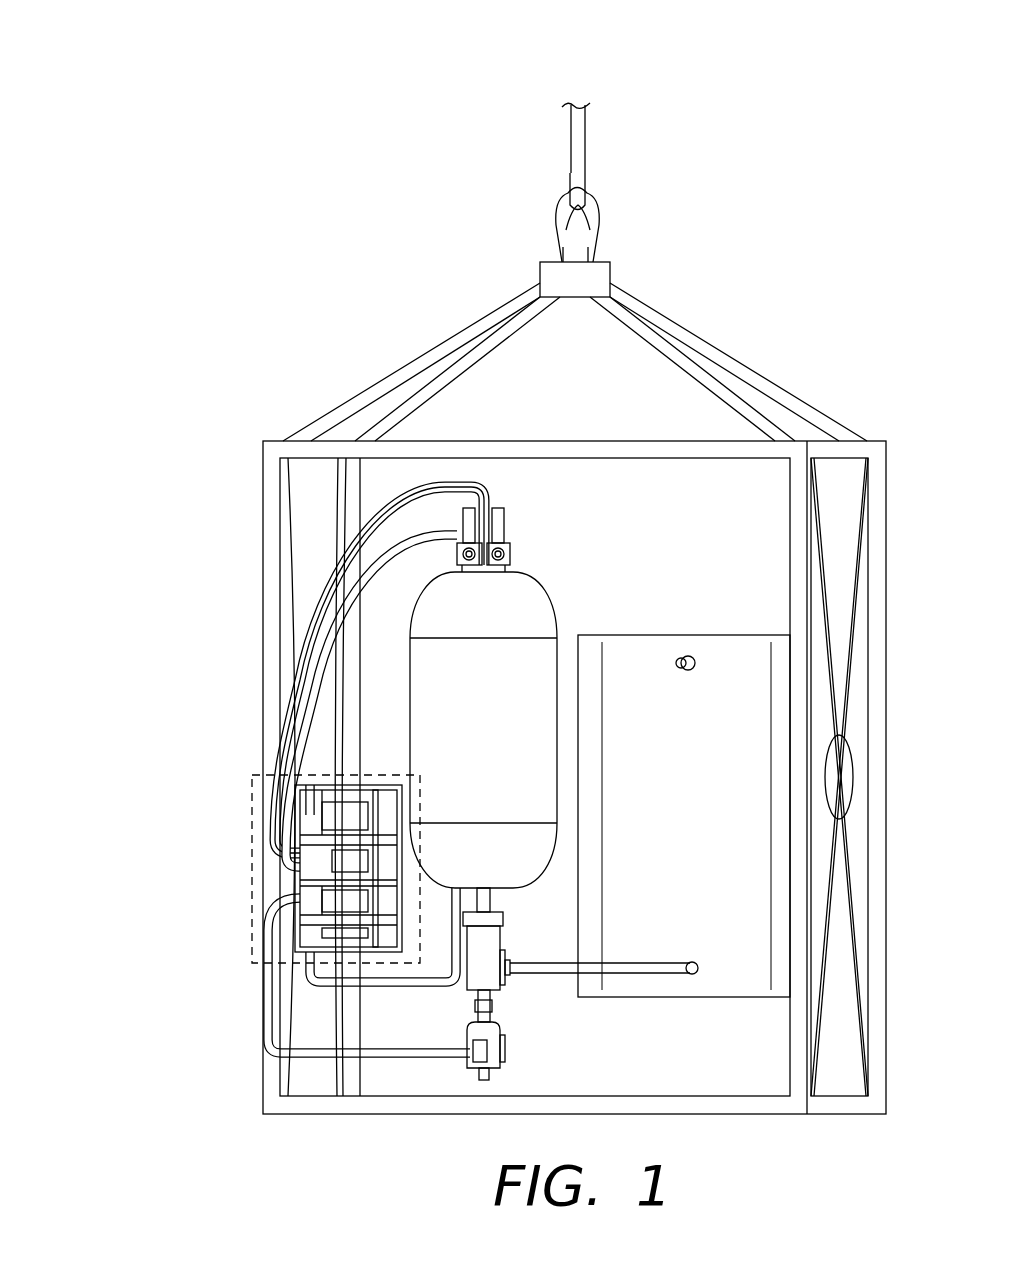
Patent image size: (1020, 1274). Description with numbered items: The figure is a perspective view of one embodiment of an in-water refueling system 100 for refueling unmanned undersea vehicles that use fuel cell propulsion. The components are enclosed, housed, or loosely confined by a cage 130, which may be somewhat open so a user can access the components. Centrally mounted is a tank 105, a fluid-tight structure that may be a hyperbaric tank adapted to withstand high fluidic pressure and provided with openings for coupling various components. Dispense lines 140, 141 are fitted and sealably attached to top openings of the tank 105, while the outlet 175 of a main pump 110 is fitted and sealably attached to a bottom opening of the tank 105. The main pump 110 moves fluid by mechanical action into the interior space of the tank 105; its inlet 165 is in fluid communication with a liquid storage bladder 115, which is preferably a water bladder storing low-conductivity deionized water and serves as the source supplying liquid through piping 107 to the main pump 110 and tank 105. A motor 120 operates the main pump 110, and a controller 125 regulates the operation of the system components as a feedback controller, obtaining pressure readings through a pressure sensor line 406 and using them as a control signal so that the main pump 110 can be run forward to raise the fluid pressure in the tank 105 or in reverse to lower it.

The in-water refueling system 100 is at (268, 192).
The cage 130 is at (440, 340).
The dispense line 140 is at (455, 495).
The dispense line 141 is at (505, 520).
The pressure sensor line 406 is at (378, 583).
The tank 105 is at (410, 670).
The liquid storage bladder 115 is at (725, 636).
The controller 125 is at (248, 810).
The outlet 175 is at (463, 895).
The main pump 110 is at (493, 943).
The inlet 165 is at (512, 975).
The piping 107 is at (645, 970).
The motor 120 is at (462, 1042).